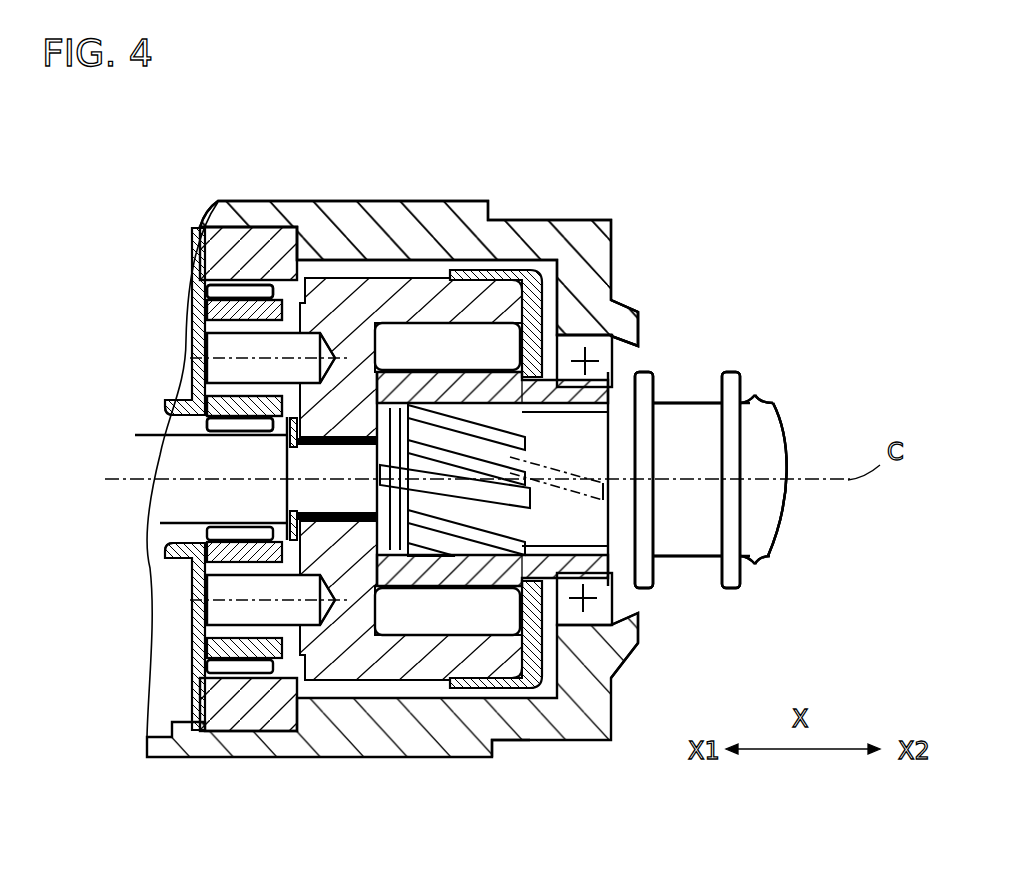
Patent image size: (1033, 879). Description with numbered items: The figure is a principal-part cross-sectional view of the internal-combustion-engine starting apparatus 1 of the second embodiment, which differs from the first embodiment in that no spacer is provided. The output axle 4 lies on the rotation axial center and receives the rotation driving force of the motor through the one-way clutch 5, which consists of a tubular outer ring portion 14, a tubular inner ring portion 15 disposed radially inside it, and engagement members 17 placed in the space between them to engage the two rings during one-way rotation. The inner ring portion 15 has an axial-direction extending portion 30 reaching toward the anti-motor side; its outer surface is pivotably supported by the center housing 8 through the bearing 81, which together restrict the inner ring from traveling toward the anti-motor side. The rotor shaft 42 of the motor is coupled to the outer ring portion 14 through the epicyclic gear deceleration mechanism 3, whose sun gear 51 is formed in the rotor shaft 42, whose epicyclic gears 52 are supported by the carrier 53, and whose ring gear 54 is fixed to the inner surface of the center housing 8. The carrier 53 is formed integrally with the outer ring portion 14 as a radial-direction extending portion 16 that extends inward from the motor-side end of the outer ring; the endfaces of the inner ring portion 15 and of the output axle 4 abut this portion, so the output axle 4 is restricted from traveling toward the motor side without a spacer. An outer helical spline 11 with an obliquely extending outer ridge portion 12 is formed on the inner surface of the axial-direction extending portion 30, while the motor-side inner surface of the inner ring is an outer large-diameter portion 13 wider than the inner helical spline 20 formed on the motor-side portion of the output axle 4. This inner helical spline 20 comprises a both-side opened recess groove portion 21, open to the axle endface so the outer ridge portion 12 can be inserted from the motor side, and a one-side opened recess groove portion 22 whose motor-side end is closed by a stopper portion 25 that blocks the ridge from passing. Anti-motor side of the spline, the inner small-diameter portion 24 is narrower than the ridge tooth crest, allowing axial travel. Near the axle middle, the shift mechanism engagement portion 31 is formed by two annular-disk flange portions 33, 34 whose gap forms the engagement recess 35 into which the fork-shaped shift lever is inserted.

The starting apparatus 1 is at (818, 152).
The epicyclic gear deceleration mechanism 3 is at (249, 758).
The output axle 4 is at (747, 548).
The one-way clutch 5 is at (447, 256).
The center housing 8 is at (473, 745).
The outer helical spline 11 is at (564, 578).
The outer ridge portion 12 is at (567, 470).
The outer large-diameter portion 13 is at (307, 500).
The outer ring portion 14 is at (422, 312).
The inner ring portion 15 is at (397, 355).
The radial-direction extending portion 16 is at (348, 340).
The engagement member 17 is at (418, 347).
The inner helical spline 20 is at (451, 575).
The both-side opened recess groove portion 21 is at (510, 507).
The one-side opened recess groove portion 22 is at (510, 447).
The inner small-diameter portion 24 is at (610, 523).
The stopper portion 25 is at (287, 458).
The axial-direction extending portion 30 is at (615, 332).
The shift mechanism engagement portion 31 is at (711, 372).
The flange portion 33 is at (645, 585).
The flange portion 34 is at (728, 585).
The engagement recess 35 is at (711, 480).
The rotor shaft 42 is at (150, 508).
The sun gear 51 is at (190, 428).
The epicyclic gear 52 is at (190, 303).
The carrier 53 is at (244, 358).
The ring gear 54 is at (280, 278).
The bearing 81 is at (572, 345).